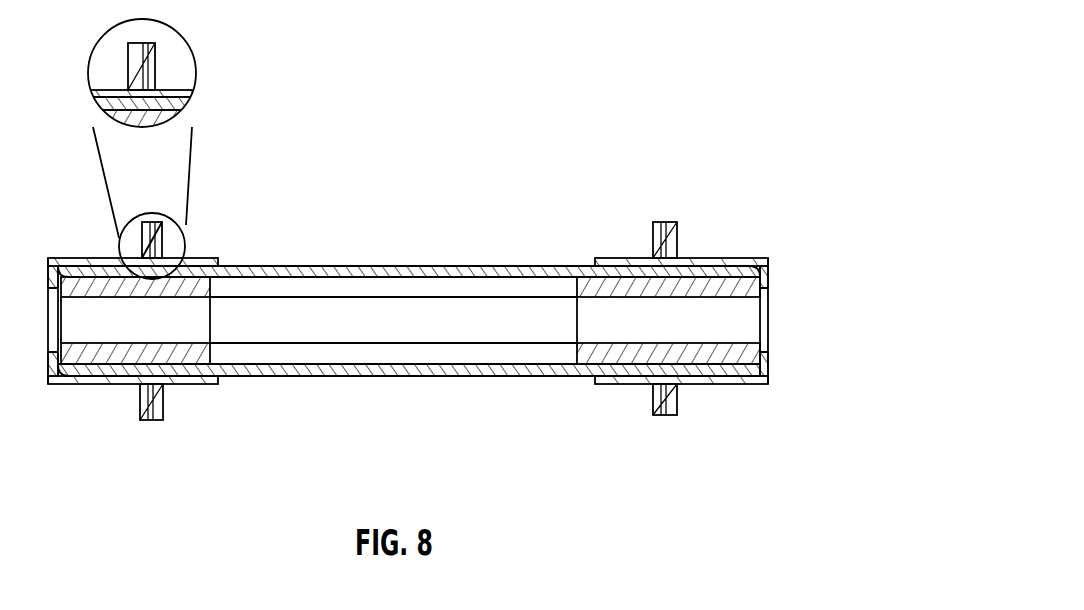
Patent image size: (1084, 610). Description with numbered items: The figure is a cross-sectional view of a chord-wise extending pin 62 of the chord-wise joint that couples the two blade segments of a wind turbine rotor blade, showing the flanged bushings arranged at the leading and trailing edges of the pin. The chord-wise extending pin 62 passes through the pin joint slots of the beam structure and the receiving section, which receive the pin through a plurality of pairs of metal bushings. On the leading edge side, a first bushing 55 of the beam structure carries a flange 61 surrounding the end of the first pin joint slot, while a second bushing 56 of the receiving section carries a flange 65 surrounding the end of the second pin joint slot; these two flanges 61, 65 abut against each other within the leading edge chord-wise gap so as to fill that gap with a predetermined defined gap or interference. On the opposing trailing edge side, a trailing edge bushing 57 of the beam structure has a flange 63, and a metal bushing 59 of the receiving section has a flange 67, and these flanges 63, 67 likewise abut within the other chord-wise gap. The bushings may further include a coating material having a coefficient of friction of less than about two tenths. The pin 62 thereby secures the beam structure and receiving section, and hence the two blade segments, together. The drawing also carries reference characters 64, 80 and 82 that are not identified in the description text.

The chord-wise extending pin 62 is at (882, 217).
The inner bore / cavity 64 is at (381, 339).
The left sleeve insert 80 is at (183, 353).
The right sleeve insert 82 is at (638, 357).
The second bushing 56 is at (98, 385).
The first bushing 55 is at (170, 387).
The flange 63 is at (655, 246).
The metal bushing 59 is at (710, 387).
The trailing edge bushing 57 is at (642, 387).
The flange 67 is at (678, 251).
The flange 61 is at (153, 72).
The flange 65 is at (128, 65).